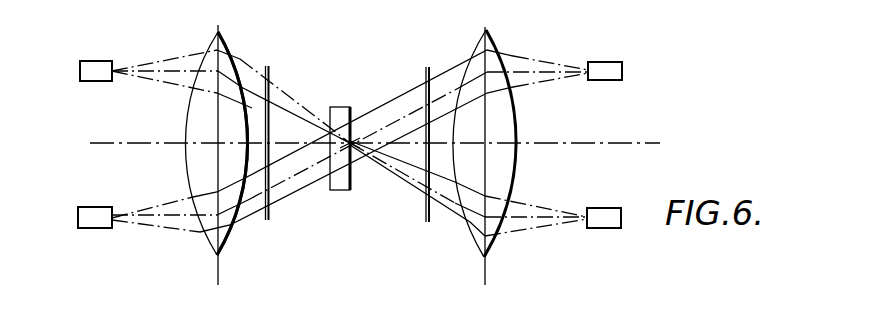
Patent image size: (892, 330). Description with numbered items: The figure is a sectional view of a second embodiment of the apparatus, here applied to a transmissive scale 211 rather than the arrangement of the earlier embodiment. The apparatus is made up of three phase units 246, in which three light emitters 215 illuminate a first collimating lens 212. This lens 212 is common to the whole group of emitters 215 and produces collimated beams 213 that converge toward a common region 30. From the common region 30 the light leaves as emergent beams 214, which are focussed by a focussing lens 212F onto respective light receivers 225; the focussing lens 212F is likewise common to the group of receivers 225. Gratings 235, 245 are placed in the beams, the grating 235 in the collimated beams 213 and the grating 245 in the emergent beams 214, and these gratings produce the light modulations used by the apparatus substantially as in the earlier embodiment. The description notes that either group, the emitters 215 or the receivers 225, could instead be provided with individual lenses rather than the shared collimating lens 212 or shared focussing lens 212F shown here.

The common region 30 is at (355, 157).
The transmissive scale 211 is at (340, 107).
The first collimating lens 212 is at (213, 247).
The focussing lens 212F is at (493, 45).
The collimated beams 213 is at (243, 225).
The emergent beams 214 is at (418, 85).
The light emitters 215 is at (77, 218).
The light receivers 225 is at (607, 62).
The grating 235 is at (273, 220).
The grating 245 is at (428, 221).
The phase units 246 is at (97, 228).